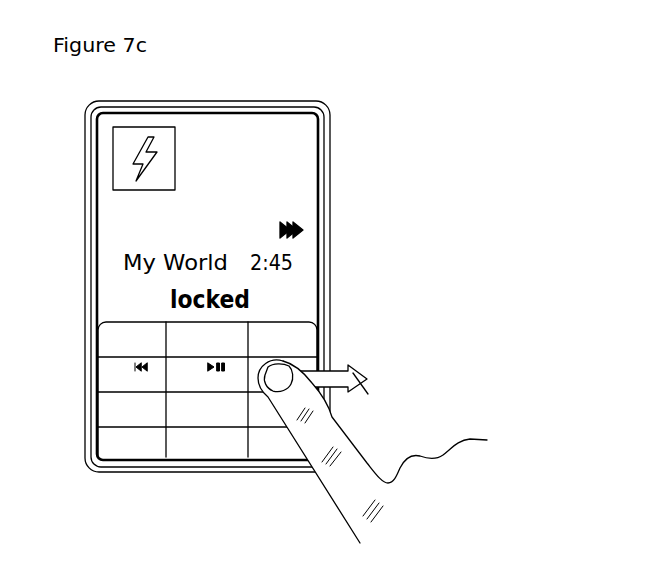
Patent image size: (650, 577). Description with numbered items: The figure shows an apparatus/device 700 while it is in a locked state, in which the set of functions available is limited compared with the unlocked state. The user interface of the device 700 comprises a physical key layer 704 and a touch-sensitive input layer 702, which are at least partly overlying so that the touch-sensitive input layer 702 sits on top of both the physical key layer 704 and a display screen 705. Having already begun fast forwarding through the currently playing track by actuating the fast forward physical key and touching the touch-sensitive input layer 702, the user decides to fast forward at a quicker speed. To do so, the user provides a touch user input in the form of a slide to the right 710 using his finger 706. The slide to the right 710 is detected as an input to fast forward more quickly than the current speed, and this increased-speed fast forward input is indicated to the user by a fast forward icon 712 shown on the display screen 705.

The apparatus/device 700 is at (284, 57).
The touch-sensitive input layer 702 is at (318, 285).
The physical key layer 704 is at (302, 370).
The display screen 705 is at (303, 183).
The finger 706 is at (330, 475).
The slide to the right 710 is at (351, 393).
The fast forward icon 712 is at (303, 228).